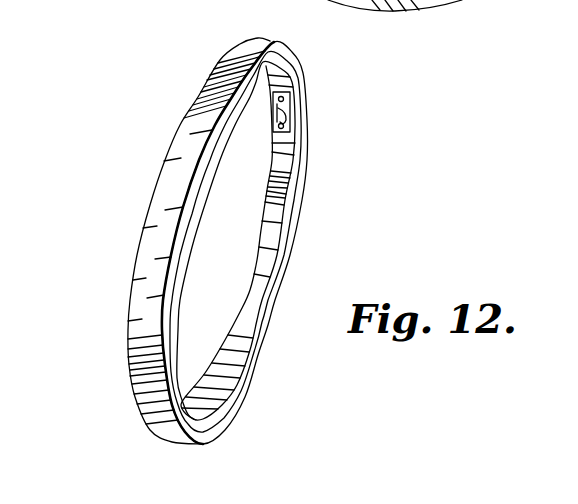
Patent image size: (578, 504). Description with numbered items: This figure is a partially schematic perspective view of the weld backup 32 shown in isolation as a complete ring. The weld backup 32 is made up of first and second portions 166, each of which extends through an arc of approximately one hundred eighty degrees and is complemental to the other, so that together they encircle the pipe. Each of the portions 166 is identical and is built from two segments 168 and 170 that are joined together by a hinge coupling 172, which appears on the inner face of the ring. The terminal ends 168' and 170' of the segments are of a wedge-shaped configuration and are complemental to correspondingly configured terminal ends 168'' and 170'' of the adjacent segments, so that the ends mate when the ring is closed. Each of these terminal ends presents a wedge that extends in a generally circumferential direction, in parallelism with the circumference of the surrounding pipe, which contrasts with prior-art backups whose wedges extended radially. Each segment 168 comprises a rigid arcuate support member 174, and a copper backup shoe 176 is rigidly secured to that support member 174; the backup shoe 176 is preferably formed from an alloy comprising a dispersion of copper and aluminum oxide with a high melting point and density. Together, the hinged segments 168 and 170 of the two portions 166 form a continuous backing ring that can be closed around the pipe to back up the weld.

The weld backup 32 is at (181, 54).
The first and second portions 166 is at (314, 106).
The segment 168 is at (224, 241).
The terminal end 168' is at (218, 243).
The terminal end 168'' is at (195, 95).
The segment 170 is at (224, 325).
The terminal end 170' is at (241, 270).
The terminal end 170'' is at (248, 372).
The hinge coupling 172 is at (277, 100).
The rigid arcuate support member 174 is at (285, 152).
The copper backup shoe 176 is at (254, 38).